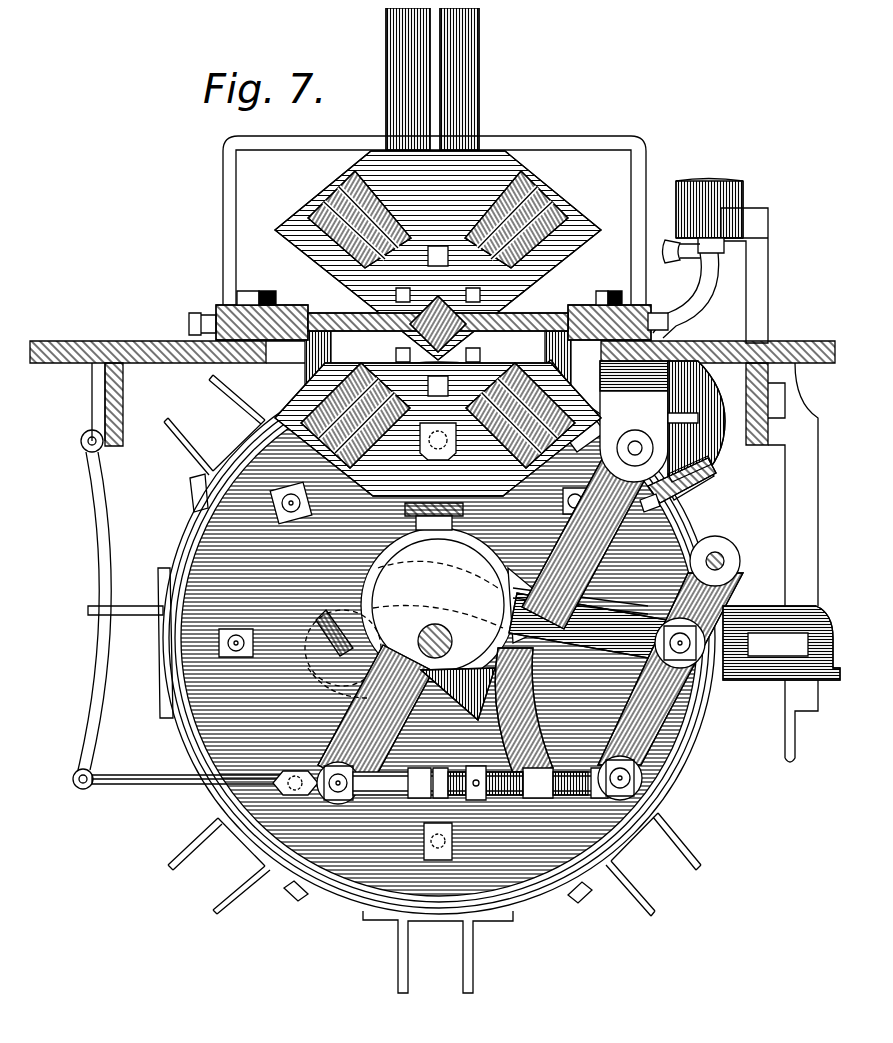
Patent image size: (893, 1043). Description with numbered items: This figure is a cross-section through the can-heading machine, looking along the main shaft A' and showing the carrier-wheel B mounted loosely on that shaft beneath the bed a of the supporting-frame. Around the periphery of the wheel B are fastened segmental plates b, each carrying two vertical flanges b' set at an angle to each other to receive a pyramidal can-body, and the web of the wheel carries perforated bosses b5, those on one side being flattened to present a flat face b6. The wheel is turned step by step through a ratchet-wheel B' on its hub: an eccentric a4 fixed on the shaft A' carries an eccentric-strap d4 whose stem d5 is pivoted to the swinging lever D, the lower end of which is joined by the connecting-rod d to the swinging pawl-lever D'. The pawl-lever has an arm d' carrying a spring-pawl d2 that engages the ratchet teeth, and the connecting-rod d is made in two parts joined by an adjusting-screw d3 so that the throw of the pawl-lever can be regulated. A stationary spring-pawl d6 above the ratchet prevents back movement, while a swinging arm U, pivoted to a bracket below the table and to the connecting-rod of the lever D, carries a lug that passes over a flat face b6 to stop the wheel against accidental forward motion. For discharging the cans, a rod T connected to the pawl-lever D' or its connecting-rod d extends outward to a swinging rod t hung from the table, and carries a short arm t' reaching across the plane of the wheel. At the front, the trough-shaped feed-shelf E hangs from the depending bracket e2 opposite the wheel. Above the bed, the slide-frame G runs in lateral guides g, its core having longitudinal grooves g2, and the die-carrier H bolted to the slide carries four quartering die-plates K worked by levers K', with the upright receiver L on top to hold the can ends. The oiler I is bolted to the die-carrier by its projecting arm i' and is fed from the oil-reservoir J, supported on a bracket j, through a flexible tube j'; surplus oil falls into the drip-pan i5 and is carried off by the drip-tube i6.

The disk or wheel B is at (439, 644).
The segmental plates b is at (402, 692).
The vertical flanges b' is at (432, 657).
The swinging rod t is at (83, 566).
The short arm t' is at (92, 803).
The rod T is at (146, 776).
The eccentric a4 is at (438, 605).
The shaft A' is at (448, 629).
The spring-pawl d2 is at (396, 502).
The bosses b5 is at (290, 510).
The flat face b6 is at (272, 508).
The stationary spring-pawl d6 is at (545, 490).
The swinging pawl-lever D' is at (375, 718).
The ratchet-wheel B' is at (487, 710).
The bed a is at (160, 334).
The eccentric-strap d4 is at (596, 621).
The swinging lever D is at (670, 650).
The swinging arm U is at (589, 533).
The projecting arm i' is at (595, 421).
The oiler I is at (705, 440).
The drip-tube i6 is at (655, 497).
The drip-pan i5 is at (705, 470).
The stem or arm d5 is at (670, 628).
The shelf or table E is at (781, 643).
The depending bracket e2 is at (782, 562).
The connecting-rod d is at (457, 800).
The adjusting-screw d3 is at (505, 790).
The arm d' is at (308, 686).
The upright receiver L is at (472, 22).
The die frames or carriers H is at (438, 255).
The lever K' is at (423, 219).
The die-plates K is at (438, 429).
The lateral guides g is at (262, 298).
The longitudinal grooves g2 is at (432, 317).
The slide-frame G is at (283, 338).
The oil-reservoir J is at (737, 190).
The bracket j is at (749, 275).
The flexible tube j' is at (687, 288).